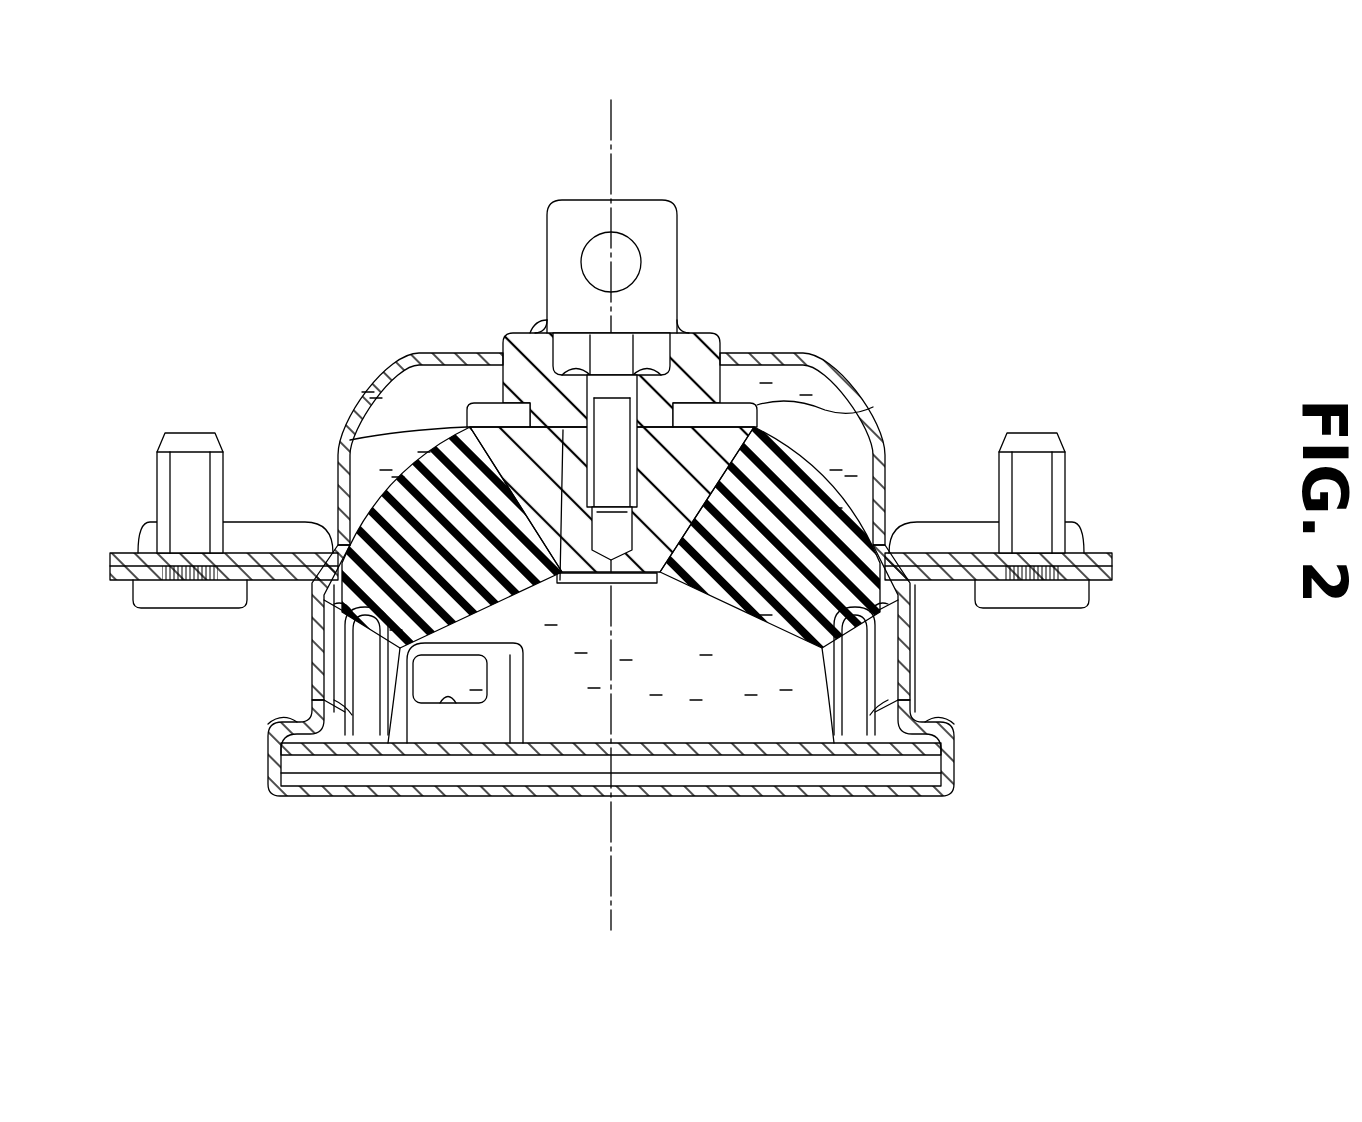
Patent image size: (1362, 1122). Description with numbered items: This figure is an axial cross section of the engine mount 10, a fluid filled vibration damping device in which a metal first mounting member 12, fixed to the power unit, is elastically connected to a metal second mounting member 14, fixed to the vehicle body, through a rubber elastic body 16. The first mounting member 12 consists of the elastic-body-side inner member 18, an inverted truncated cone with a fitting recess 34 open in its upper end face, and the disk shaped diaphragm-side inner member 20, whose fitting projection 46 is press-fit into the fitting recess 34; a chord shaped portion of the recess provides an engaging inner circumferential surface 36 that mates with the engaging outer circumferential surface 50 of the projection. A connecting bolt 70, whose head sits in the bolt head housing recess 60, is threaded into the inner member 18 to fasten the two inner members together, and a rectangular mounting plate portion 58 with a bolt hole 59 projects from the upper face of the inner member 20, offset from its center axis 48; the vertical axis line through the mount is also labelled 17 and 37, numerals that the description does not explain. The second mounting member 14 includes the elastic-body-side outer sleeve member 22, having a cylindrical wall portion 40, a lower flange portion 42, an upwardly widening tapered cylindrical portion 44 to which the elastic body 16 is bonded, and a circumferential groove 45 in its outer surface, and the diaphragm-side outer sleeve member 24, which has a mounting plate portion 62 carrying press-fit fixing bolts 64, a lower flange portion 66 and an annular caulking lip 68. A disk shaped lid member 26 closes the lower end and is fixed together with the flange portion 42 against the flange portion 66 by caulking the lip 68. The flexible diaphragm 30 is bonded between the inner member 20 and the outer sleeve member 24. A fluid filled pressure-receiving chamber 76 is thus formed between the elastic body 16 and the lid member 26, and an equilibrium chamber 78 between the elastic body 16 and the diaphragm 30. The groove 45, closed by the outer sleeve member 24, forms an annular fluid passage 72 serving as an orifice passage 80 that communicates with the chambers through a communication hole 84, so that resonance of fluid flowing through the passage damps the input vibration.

The engine mount 10 is at (633, 507).
The first mounting member 12 is at (604, 414).
The second mounting member 14 is at (633, 653).
The rubber elastic body 16 is at (747, 592).
The central axis 17 is at (696, 507).
The elastic-body-side inner member 18 is at (565, 425).
The diaphragm-side inner member 20 is at (604, 347).
The elastic-body-side outer sleeve member 22 is at (858, 682).
The diaphragm-side outer sleeve member 24 is at (918, 650).
The lid member 26 is at (743, 748).
The flexible diaphragm 30 is at (365, 390).
The fitting recess 34 is at (560, 580).
The engaging inner circumferential surface 36 is at (662, 418).
The axis of bolt 37 is at (696, 507).
The cylindrical wall portion 40 is at (368, 688).
The flange portion 42 is at (932, 748).
The tapered cylindrical portion 44 is at (345, 628).
The circumferential groove 45 is at (853, 698).
The fitting projection 46 is at (470, 428).
The center axis 48 is at (611, 128).
The engaging outer circumferential surface 50 is at (880, 408).
The mounting plate portion 58 is at (613, 225).
The bolt hole 59 is at (636, 238).
The bolt head housing recess 60 is at (583, 348).
The mounting plate portion 62 is at (1100, 578).
The fixing bolts 64 is at (185, 475).
The flange portion 66 is at (937, 712).
The annular caulking lip 68 is at (265, 752).
The connecting bolt 70 is at (549, 316).
The annular fluid passage 72 is at (271, 728).
The pressure-receiving chamber 76 is at (692, 671).
The equilibrium chamber 78 is at (832, 463).
The orifice passage 80 is at (286, 728).
The communication hole 84 is at (448, 704).